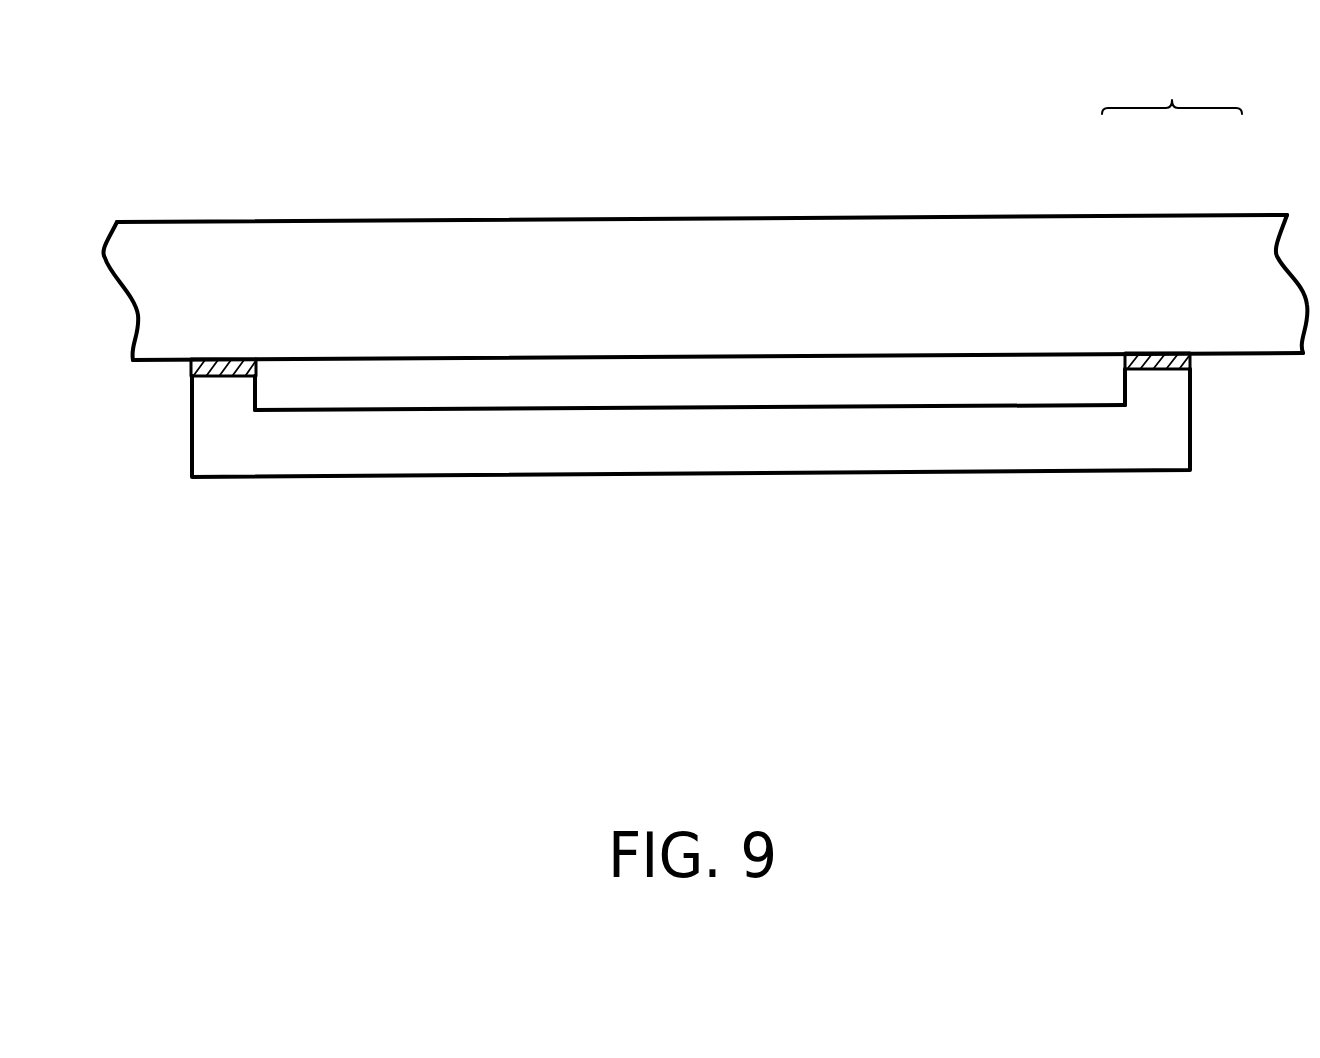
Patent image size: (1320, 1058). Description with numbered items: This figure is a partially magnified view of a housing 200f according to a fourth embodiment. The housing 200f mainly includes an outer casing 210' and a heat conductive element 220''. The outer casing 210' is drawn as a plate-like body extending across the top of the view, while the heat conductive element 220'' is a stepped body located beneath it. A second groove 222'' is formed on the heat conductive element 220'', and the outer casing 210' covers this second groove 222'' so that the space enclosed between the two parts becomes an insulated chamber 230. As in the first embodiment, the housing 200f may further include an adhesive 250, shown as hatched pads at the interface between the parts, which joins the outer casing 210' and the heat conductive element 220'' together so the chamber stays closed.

The housing 200f is at (1172, 84).
The outer casing 210' is at (705, 238).
The heat conductive element 220'' is at (717, 296).
The second groove 222'' is at (1071, 271).
The insulated chamber 230 is at (985, 382).
The adhesive 250 is at (227, 360).